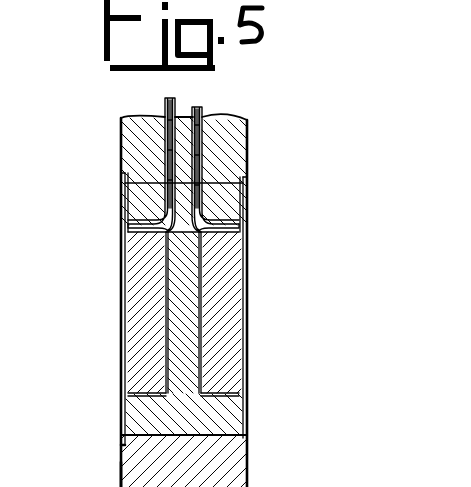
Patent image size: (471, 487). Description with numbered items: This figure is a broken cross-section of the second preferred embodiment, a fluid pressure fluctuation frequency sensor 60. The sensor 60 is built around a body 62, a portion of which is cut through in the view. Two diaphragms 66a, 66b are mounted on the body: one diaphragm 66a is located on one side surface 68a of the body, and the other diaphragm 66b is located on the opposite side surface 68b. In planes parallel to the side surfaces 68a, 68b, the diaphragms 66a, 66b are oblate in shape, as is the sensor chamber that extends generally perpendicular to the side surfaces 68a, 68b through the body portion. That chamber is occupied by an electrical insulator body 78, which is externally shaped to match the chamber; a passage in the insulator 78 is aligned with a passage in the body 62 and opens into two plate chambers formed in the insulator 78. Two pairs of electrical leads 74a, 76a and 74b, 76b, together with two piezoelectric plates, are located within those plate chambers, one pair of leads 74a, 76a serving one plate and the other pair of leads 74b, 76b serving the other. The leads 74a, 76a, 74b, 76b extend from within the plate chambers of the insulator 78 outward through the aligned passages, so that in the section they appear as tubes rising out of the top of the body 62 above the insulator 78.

The fluid pressure fluctuation frequency sensor 60 is at (302, 262).
The body 62 is at (247, 147).
The diaphragm 66a is at (245, 197).
The diaphragm 66b is at (121, 380).
The side surface 68a is at (247, 467).
The side surface 68b is at (121, 462).
The electrical lead 74a is at (204, 110).
The electrical lead 74b is at (163, 104).
The electrical lead 76a is at (196, 107).
The electrical lead 76b is at (172, 99).
The electrical insulator body 78 is at (223, 407).